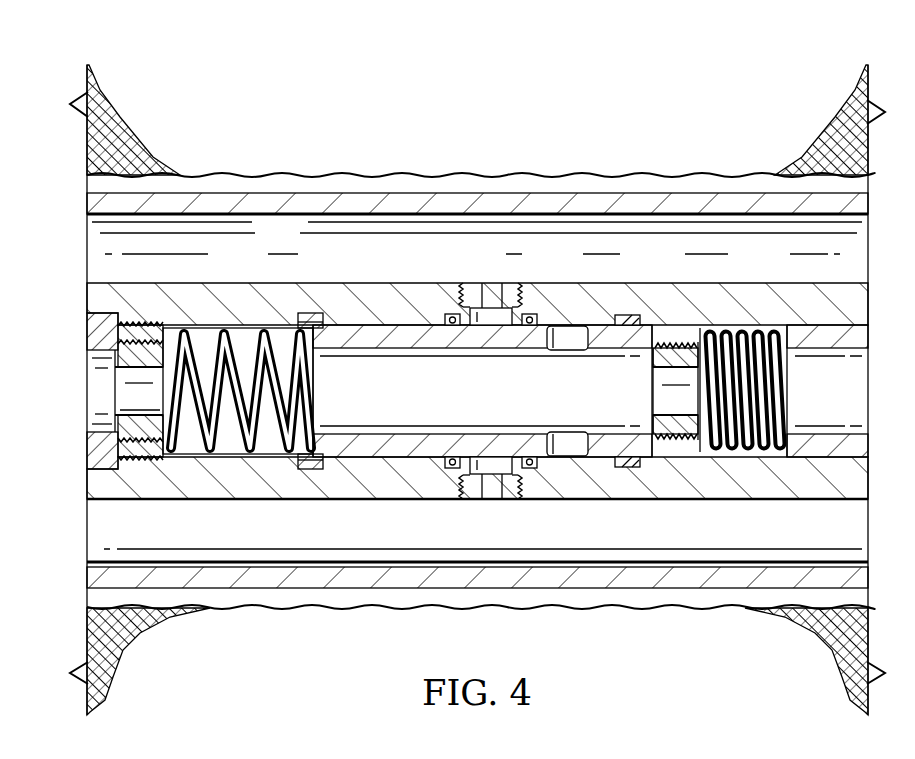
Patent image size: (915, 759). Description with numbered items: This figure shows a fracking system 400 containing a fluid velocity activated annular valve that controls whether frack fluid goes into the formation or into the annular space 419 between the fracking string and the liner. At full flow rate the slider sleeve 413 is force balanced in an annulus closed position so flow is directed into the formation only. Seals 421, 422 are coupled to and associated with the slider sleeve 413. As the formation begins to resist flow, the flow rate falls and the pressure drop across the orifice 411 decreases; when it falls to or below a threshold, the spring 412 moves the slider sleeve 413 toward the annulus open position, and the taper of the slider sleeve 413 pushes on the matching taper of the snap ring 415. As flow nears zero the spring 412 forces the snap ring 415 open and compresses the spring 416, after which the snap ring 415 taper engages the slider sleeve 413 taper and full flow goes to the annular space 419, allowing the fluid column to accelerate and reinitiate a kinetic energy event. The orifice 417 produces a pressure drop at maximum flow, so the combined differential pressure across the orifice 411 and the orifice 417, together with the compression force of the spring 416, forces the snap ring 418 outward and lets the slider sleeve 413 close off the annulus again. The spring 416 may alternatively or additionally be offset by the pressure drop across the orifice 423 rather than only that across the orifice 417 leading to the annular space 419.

The downhole tool assembly 400 is at (374, 74).
The orifice 411 is at (660, 395).
The spring 412 is at (740, 335).
The slider sleeve 413 is at (372, 330).
The snap ring 415 is at (312, 316).
The spring 416 is at (222, 335).
The orifice 417 is at (493, 295).
The snap ring 418 is at (627, 315).
The annular space 419 is at (293, 212).
The seal 421 is at (452, 314).
The seal 422 is at (529, 314).
The orifice 423 is at (130, 397).